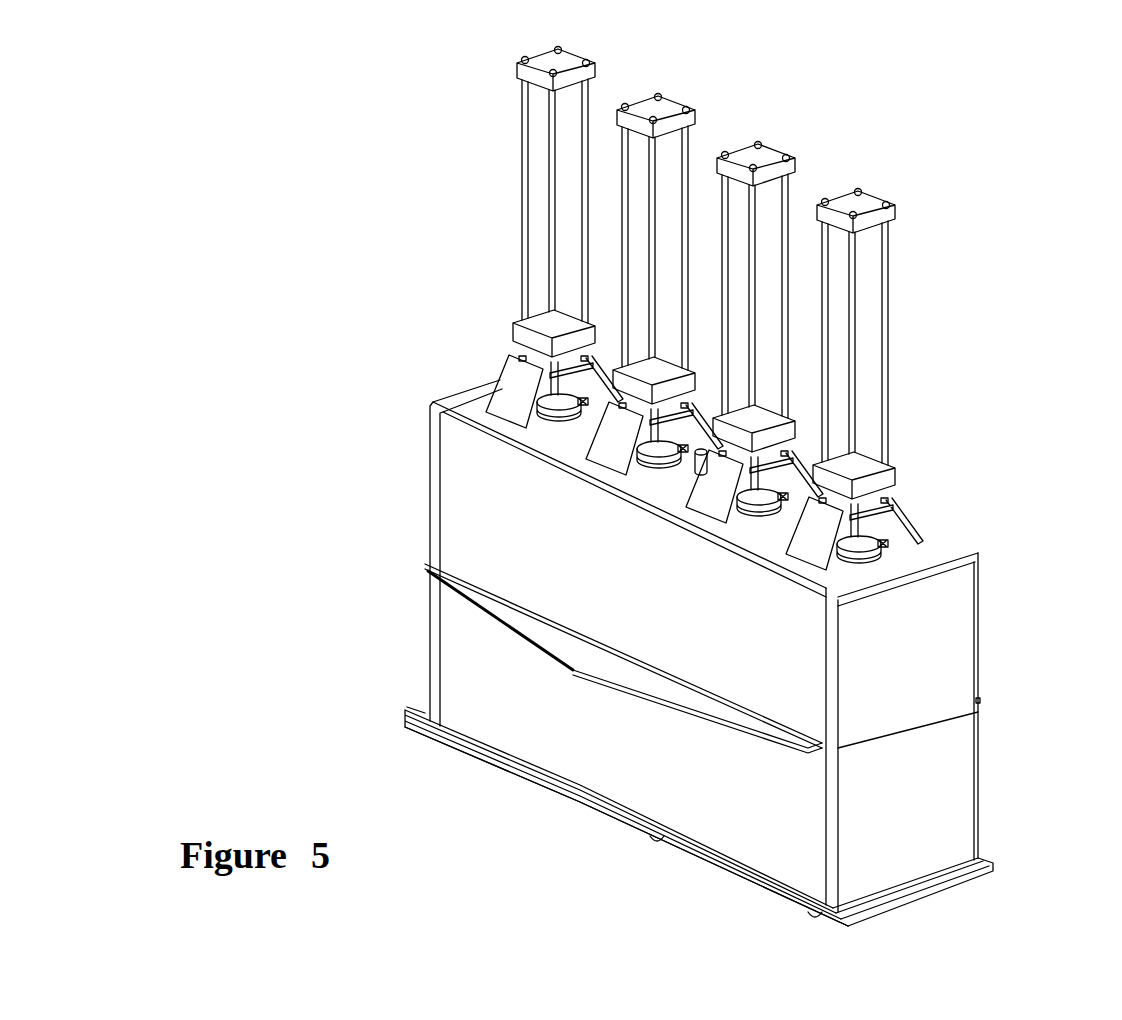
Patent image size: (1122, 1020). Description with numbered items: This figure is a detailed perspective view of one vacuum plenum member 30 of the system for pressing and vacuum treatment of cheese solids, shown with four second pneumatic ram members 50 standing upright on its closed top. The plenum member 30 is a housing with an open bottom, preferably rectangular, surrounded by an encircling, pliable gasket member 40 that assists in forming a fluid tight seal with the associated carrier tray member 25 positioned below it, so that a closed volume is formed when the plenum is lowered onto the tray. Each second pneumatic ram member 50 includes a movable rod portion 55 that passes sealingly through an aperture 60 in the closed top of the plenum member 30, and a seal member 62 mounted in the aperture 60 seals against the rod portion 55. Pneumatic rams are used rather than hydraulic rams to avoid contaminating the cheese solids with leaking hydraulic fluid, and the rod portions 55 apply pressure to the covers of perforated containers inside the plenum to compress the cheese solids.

The carrier tray member 25 is at (618, 820).
The vacuum plenum member 30 is at (470, 515).
The gasket member 40 is at (405, 710).
The second pneumatic ram member 50 is at (567, 120).
The movable rod portion 55 is at (545, 382).
The aperture 60 is at (897, 531).
The seal member 62 is at (553, 415).